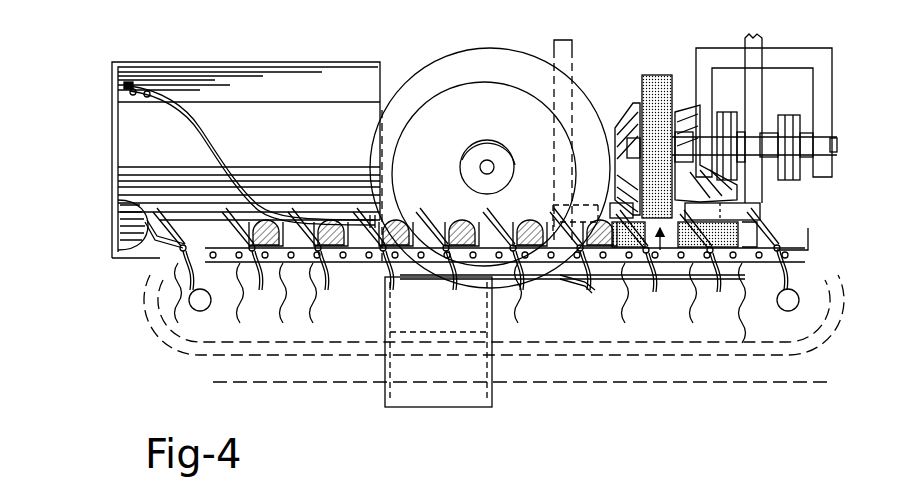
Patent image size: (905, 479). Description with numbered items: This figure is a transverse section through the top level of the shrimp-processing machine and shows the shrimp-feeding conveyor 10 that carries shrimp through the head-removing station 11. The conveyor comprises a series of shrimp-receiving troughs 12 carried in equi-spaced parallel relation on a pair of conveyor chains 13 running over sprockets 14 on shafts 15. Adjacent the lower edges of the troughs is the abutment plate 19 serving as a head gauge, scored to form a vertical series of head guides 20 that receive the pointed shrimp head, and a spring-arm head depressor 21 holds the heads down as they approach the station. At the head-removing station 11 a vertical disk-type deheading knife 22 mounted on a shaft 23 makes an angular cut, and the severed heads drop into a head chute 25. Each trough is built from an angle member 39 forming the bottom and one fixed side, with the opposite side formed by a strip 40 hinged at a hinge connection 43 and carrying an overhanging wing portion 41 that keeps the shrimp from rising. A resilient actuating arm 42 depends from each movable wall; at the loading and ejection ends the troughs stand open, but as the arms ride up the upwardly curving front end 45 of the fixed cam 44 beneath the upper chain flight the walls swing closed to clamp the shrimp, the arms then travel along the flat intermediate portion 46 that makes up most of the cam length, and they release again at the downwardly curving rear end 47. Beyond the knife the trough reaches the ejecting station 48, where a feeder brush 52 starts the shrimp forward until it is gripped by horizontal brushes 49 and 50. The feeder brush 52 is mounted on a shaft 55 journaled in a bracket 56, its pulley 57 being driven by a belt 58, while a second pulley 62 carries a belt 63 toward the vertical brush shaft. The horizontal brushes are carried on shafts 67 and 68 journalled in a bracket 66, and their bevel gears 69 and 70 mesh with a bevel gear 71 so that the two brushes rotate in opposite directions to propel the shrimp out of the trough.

The shrimp-feeding conveyor 10 is at (150, 333).
The head-removing station 11 is at (445, 47).
The shrimp-receiving trough 12 is at (165, 258).
The conveyor chain 13 is at (700, 292).
The sprocket 14 is at (245, 313).
The shaft 15 is at (190, 300).
The abutment plate 19 is at (118, 148).
The head guide 20 is at (128, 185).
The head depressor 21 is at (225, 152).
The deheading knife 22 is at (425, 75).
The shaft 23 is at (478, 167).
The head chute 25 is at (493, 316).
The angle member 39 is at (200, 205).
The strip 40 is at (115, 250).
The overhanging wing portion 41 is at (115, 205).
The actuating arm 42 is at (437, 234).
The hinge connection 43 is at (175, 270).
The fixed cam 44 is at (474, 283).
The upwardly curving front end 45 is at (330, 292).
The compartment 46 is at (438, 341).
The downwardly curving rear end 47 is at (590, 288).
The ejecting station 48 is at (650, 268).
The horizontal brush 49 is at (623, 282).
The horizontal brush 50 is at (747, 237).
The feeder brush 52 is at (657, 75).
The shaft 55 is at (838, 143).
The bracket 56 is at (828, 80).
The pulley 57 is at (722, 110).
The belt 58 is at (720, 110).
The second pulley 62 is at (807, 183).
The belt 63 is at (790, 115).
The bracket 66 is at (574, 60).
The shaft 67 is at (610, 208).
The shaft 68 is at (760, 212).
The bevel gear 69 is at (612, 165).
The bevel gear 70 is at (742, 195).
The bevel gear 71 is at (617, 122).